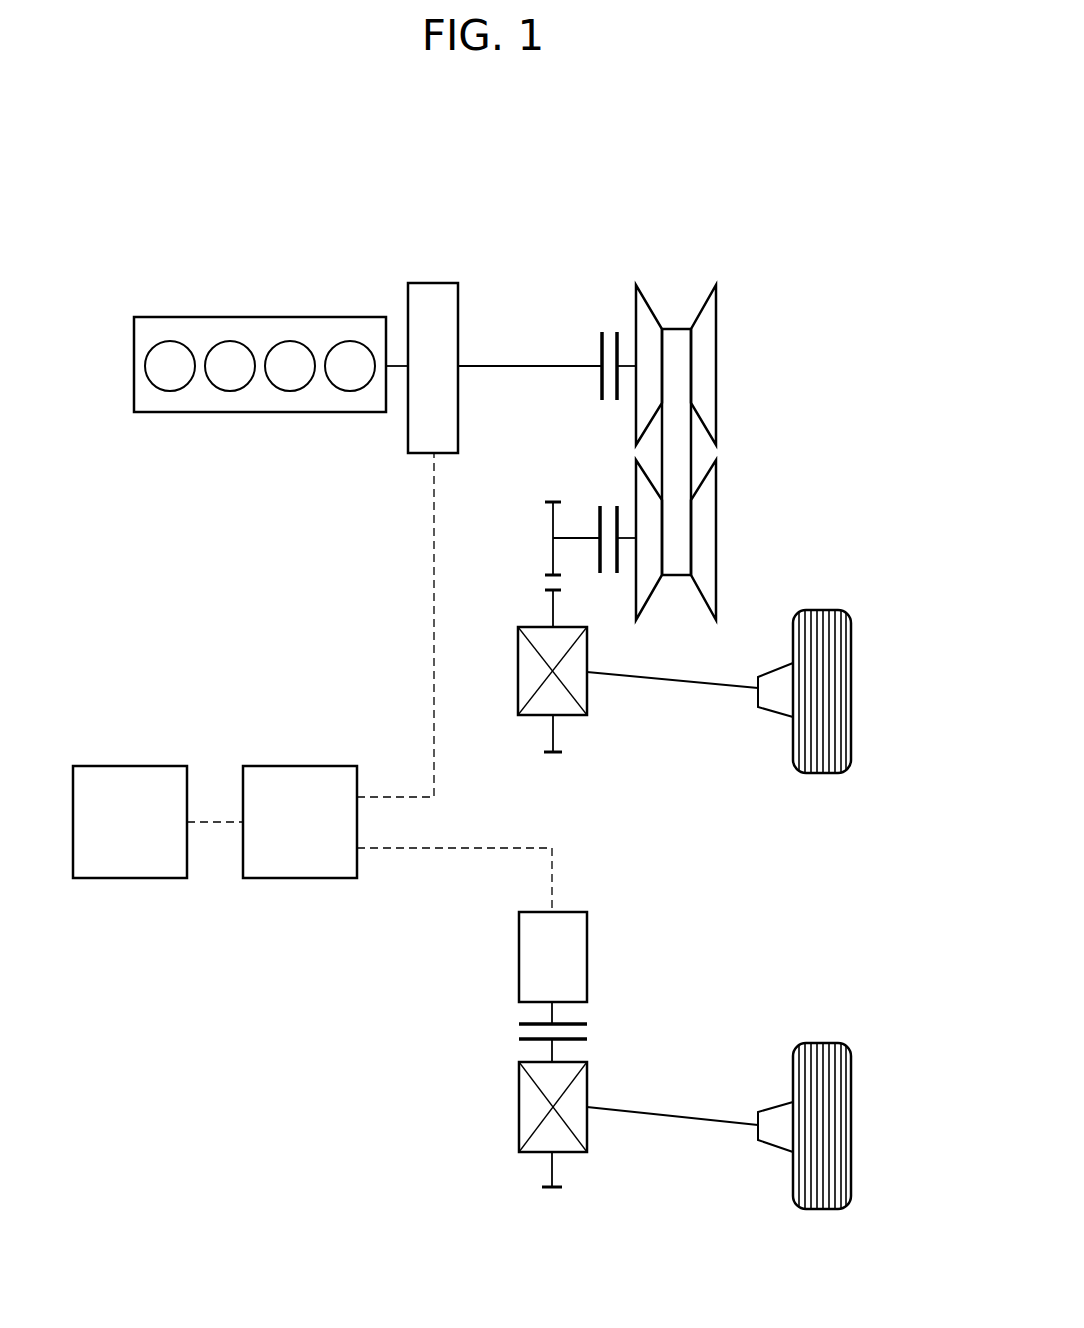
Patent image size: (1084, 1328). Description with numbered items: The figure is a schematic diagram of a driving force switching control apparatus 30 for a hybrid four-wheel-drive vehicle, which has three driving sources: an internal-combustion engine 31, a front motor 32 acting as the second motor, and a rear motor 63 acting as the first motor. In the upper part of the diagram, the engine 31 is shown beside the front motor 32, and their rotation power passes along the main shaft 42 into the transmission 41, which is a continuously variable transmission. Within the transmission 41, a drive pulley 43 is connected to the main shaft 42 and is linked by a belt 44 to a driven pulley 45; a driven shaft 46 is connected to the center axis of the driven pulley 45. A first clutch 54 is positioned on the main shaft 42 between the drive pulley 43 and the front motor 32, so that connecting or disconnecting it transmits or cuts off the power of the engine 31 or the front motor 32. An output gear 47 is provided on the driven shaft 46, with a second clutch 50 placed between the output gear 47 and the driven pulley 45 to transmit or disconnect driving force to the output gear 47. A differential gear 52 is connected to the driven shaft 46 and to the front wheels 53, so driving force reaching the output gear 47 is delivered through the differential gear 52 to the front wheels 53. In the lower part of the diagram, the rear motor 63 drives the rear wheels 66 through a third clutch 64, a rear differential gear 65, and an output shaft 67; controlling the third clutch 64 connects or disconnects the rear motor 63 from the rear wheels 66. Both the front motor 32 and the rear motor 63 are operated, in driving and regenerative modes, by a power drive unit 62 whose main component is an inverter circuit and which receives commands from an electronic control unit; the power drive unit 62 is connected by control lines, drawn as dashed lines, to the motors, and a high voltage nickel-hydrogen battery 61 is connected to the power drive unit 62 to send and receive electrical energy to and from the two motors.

The driving force switching control apparatus 30 is at (433, 173).
The engine 31 is at (255, 317).
The front motor 32 is at (440, 283).
The transmission 41 is at (719, 419).
The main shaft 42 is at (499, 365).
The drive pulley 43 is at (717, 330).
The belt 44 is at (692, 453).
The driven pulley 45 is at (717, 511).
The driven shaft 46 is at (582, 537).
The output gear 47 is at (549, 502).
The second clutch 50 is at (617, 508).
The differential gear 52 is at (518, 672).
The front wheels 53 is at (851, 637).
The first clutch 54 is at (600, 337).
The battery 61 is at (133, 879).
The power drive unit 62 is at (293, 879).
The rear motor 63 is at (588, 935).
The third clutch 64 is at (588, 1024).
The rear differential gear 65 is at (588, 1072).
The rear wheels 66 is at (851, 1078).
The output shaft 67 is at (672, 1123).